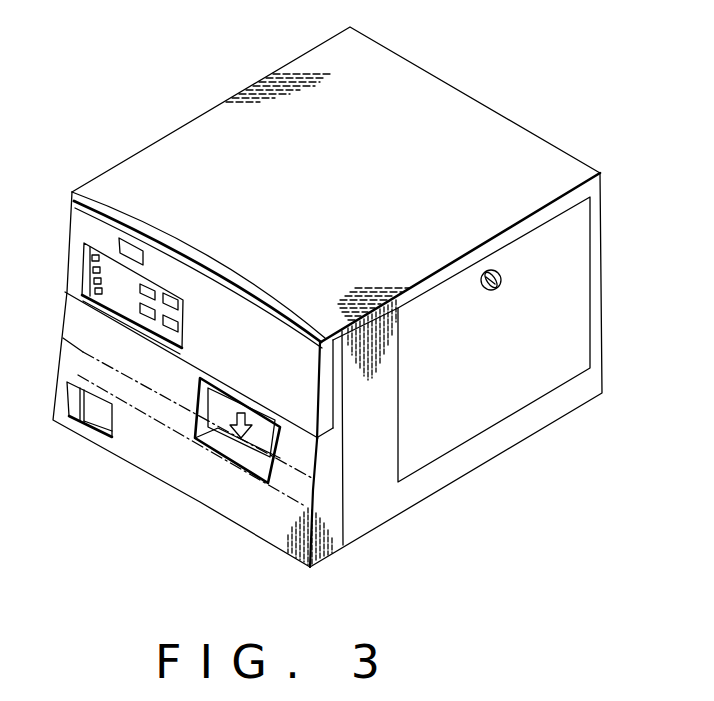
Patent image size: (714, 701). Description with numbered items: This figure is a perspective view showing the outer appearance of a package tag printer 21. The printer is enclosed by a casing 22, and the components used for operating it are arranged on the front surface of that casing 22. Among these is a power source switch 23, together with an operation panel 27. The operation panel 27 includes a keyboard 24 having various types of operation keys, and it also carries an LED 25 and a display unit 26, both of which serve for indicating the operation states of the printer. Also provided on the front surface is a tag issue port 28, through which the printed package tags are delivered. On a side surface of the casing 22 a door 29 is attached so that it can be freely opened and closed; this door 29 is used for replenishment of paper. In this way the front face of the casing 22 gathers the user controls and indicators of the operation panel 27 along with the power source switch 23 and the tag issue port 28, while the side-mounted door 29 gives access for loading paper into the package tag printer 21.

The package tag printer 21 is at (477, 99).
The casing 22 is at (157, 142).
The power source switch 23 is at (90, 413).
The keyboard 24 is at (178, 323).
The LED 25 is at (87, 272).
The display unit 26 is at (120, 248).
The operation panel 27 is at (200, 360).
The tag issue port 28 is at (250, 440).
The door 29 is at (477, 427).